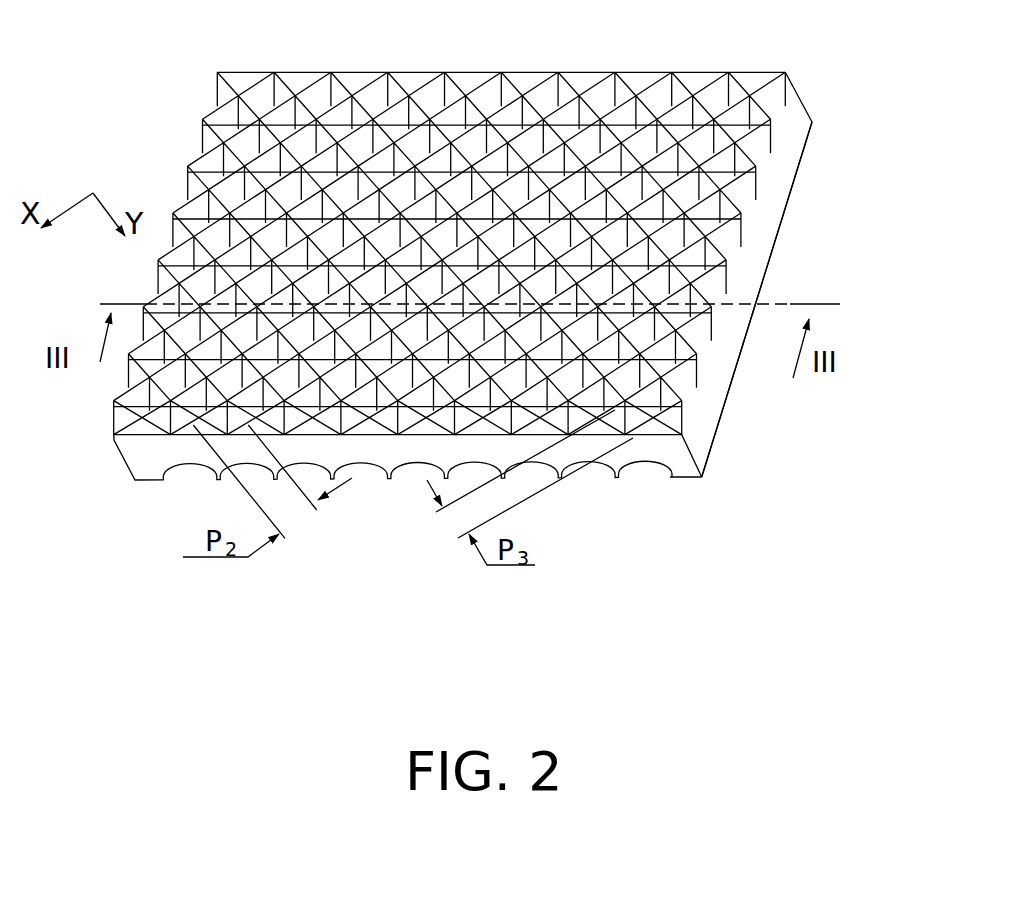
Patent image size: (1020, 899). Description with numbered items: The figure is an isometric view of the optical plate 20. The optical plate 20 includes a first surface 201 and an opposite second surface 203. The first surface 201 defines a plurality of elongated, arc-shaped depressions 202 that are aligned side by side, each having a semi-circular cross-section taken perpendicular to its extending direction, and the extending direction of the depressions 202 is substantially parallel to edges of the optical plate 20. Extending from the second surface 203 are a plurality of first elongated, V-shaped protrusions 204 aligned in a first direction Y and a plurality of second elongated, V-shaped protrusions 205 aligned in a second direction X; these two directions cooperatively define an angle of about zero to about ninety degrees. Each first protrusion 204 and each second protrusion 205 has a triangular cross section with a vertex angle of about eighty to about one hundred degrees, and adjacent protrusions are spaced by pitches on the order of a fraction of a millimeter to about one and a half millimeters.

The optical plate 20 is at (512, 263).
The first surface 201 is at (732, 399).
The elongated, arc-shaped depressions 202 is at (634, 470).
The second surface 203 is at (512, 253).
The first elongated, V-shaped protrusions 204 is at (740, 198).
The second elongated, V-shaped protrusions 205 is at (730, 231).